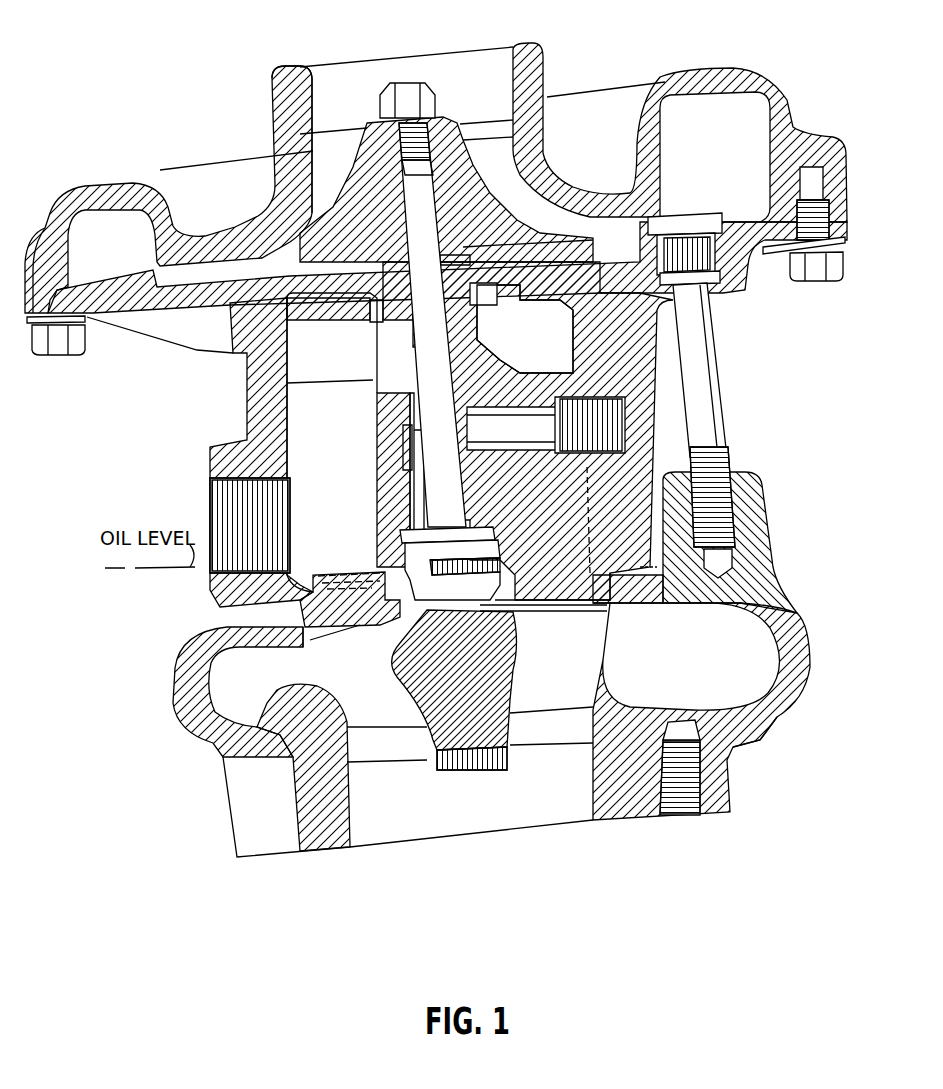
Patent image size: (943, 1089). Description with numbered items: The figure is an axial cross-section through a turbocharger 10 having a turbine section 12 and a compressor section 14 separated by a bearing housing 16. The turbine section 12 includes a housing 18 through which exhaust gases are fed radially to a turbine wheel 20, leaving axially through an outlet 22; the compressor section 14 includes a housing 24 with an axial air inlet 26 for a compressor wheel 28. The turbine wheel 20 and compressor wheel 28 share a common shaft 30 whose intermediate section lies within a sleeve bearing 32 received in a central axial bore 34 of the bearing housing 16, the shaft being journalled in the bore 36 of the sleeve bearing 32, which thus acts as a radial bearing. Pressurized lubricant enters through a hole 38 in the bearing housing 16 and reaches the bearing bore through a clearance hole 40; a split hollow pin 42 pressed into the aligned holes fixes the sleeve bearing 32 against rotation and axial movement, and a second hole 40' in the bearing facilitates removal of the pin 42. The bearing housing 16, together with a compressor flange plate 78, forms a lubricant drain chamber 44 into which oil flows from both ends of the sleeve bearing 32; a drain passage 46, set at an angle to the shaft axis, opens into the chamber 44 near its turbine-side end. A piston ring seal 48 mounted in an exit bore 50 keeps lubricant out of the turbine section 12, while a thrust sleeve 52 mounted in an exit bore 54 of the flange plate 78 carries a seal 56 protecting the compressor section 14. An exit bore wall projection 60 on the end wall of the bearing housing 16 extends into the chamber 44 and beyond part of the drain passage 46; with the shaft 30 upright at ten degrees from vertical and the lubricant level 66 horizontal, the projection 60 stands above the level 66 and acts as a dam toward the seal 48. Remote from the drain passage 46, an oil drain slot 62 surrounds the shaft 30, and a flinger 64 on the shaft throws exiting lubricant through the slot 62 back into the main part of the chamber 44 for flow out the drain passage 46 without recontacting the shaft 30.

The turbocharger 10 is at (602, 58).
The turbine section 12 is at (817, 667).
The compressor section 14 is at (158, 170).
The bearing housing 16 is at (628, 365).
The housing 18 is at (763, 720).
The turbine wheel 20 is at (473, 770).
The outlet 22 is at (607, 787).
The housing 24 is at (705, 70).
The axial air inlet 26 is at (300, 90).
The compressor wheel 28 is at (443, 133).
The shaft 30 is at (420, 363).
The sleeve bearing 32 is at (403, 383).
The central axial bore 34 is at (405, 485).
The bore 36 is at (420, 507).
The hole 38 is at (623, 447).
The clearance hole 40 is at (513, 380).
The second hole 40' is at (374, 445).
The split hollow pin 42 is at (513, 413).
The lubricant drain chamber 44 is at (340, 470).
The drain passage 46 is at (220, 505).
The piston ring seal 48 is at (400, 630).
The exit bore 50 is at (513, 593).
The thrust sleeve 52 is at (377, 327).
The exit bore 54 is at (500, 297).
The seal 56 is at (468, 262).
The exit bore wall projection 60 is at (415, 560).
The oil drain slot 62 is at (565, 617).
The flinger 64 is at (440, 545).
The lubricant level 66 is at (330, 575).
The compressor flange plate 78 is at (670, 300).